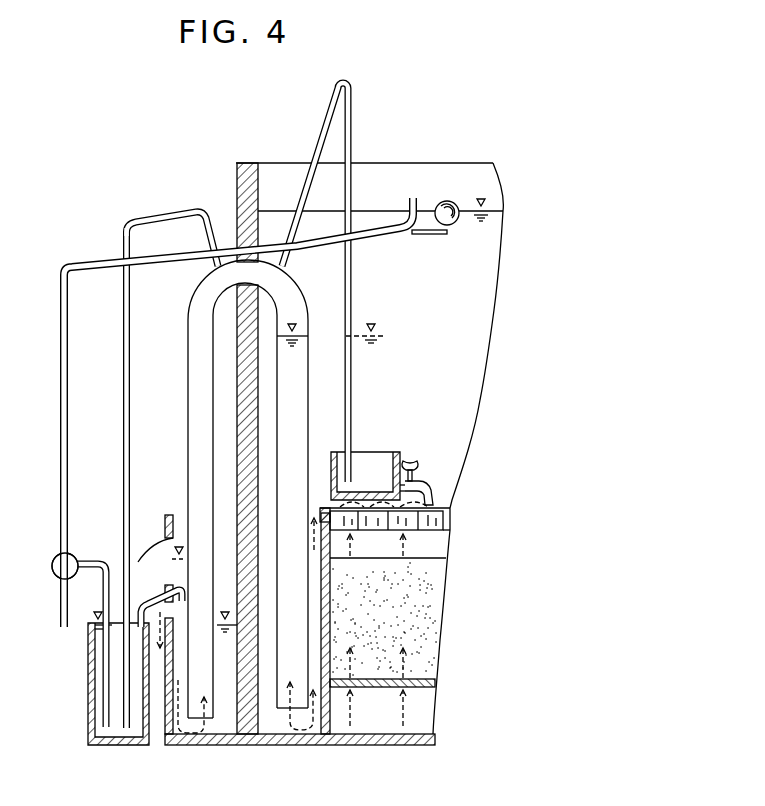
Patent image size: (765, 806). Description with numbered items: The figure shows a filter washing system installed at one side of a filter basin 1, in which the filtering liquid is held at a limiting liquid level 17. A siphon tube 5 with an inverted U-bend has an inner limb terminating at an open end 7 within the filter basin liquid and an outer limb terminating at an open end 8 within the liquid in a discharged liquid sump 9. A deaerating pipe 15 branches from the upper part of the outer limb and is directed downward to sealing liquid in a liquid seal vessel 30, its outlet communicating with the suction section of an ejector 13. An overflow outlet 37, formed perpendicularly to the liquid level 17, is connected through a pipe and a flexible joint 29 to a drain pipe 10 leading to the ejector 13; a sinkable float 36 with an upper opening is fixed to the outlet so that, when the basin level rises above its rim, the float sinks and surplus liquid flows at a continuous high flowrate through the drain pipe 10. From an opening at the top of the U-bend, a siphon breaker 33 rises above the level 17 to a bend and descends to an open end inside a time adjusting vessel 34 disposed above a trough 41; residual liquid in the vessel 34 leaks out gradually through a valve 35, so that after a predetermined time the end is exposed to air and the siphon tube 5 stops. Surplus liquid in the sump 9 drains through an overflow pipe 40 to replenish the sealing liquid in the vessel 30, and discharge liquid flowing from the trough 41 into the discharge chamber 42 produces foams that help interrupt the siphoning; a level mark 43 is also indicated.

The filter basin 1 is at (369, 426).
The siphon tube 5 is at (308, 396).
The open end of inner limb 7 is at (302, 710).
The open end of outer limb 8 is at (212, 720).
The discharged liquid sump 9 is at (190, 746).
The drain pipe 10 is at (93, 258).
The ejector 13 is at (53, 557).
The deaerating pipe 15 is at (132, 397).
The liquid level 17 is at (371, 210).
The flexible joint 29 is at (275, 237).
The liquid seal vessel 30 is at (112, 745).
The siphon breaker 33 is at (353, 273).
The time adjusting vessel 34 is at (396, 452).
The valve 35 is at (436, 496).
The sinkable float 36 is at (453, 226).
The overflow outlet 37 is at (416, 197).
The overflow pipe 40 is at (150, 606).
The trough 41 is at (450, 516).
The discharge chamber 42 is at (275, 718).
The liquid level mark 43 is at (352, 331).